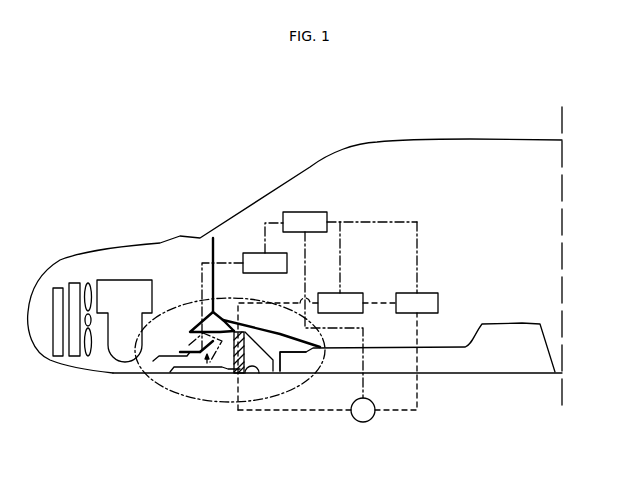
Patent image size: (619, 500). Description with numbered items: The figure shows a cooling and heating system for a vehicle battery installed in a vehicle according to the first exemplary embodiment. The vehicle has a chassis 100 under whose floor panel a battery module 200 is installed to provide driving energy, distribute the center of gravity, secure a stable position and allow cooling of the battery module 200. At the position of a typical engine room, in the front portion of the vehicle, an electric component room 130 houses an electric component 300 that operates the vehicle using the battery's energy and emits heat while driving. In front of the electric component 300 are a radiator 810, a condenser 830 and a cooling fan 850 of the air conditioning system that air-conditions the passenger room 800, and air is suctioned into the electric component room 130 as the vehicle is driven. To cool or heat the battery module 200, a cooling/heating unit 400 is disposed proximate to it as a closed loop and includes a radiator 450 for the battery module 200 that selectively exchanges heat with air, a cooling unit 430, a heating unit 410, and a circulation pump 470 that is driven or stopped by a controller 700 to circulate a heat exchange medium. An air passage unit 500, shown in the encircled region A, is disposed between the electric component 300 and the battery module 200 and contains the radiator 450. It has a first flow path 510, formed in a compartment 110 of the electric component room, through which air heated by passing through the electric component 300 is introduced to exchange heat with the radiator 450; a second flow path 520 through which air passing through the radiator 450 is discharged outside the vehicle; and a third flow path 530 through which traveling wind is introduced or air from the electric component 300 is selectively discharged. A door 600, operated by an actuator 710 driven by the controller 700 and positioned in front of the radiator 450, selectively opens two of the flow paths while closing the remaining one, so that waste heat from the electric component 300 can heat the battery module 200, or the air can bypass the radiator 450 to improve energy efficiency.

The chassis 100 is at (346, 142).
The compartment of the electric component room 110 is at (199, 322).
The electric component room 130 is at (159, 271).
The battery module 200 is at (490, 365).
The electric component 300 is at (112, 292).
The cooling/heating unit 400 is at (408, 388).
The heating unit 410 is at (351, 292).
The cooling unit 430 is at (433, 292).
The radiator 450 is at (255, 376).
The circulation pump 470 is at (365, 423).
The air passage unit 500 is at (221, 377).
The first flow path 510 is at (199, 358).
The second flow path 520 is at (272, 370).
The third flow path 530 is at (161, 370).
The door 600 is at (206, 366).
The controller 700 is at (297, 210).
The actuator 710 is at (253, 252).
The passenger room 800 is at (438, 177).
The radiator 810 is at (75, 293).
The condenser 830 is at (60, 292).
The cooling fan 850 is at (88, 357).
The detail region A is at (148, 375).